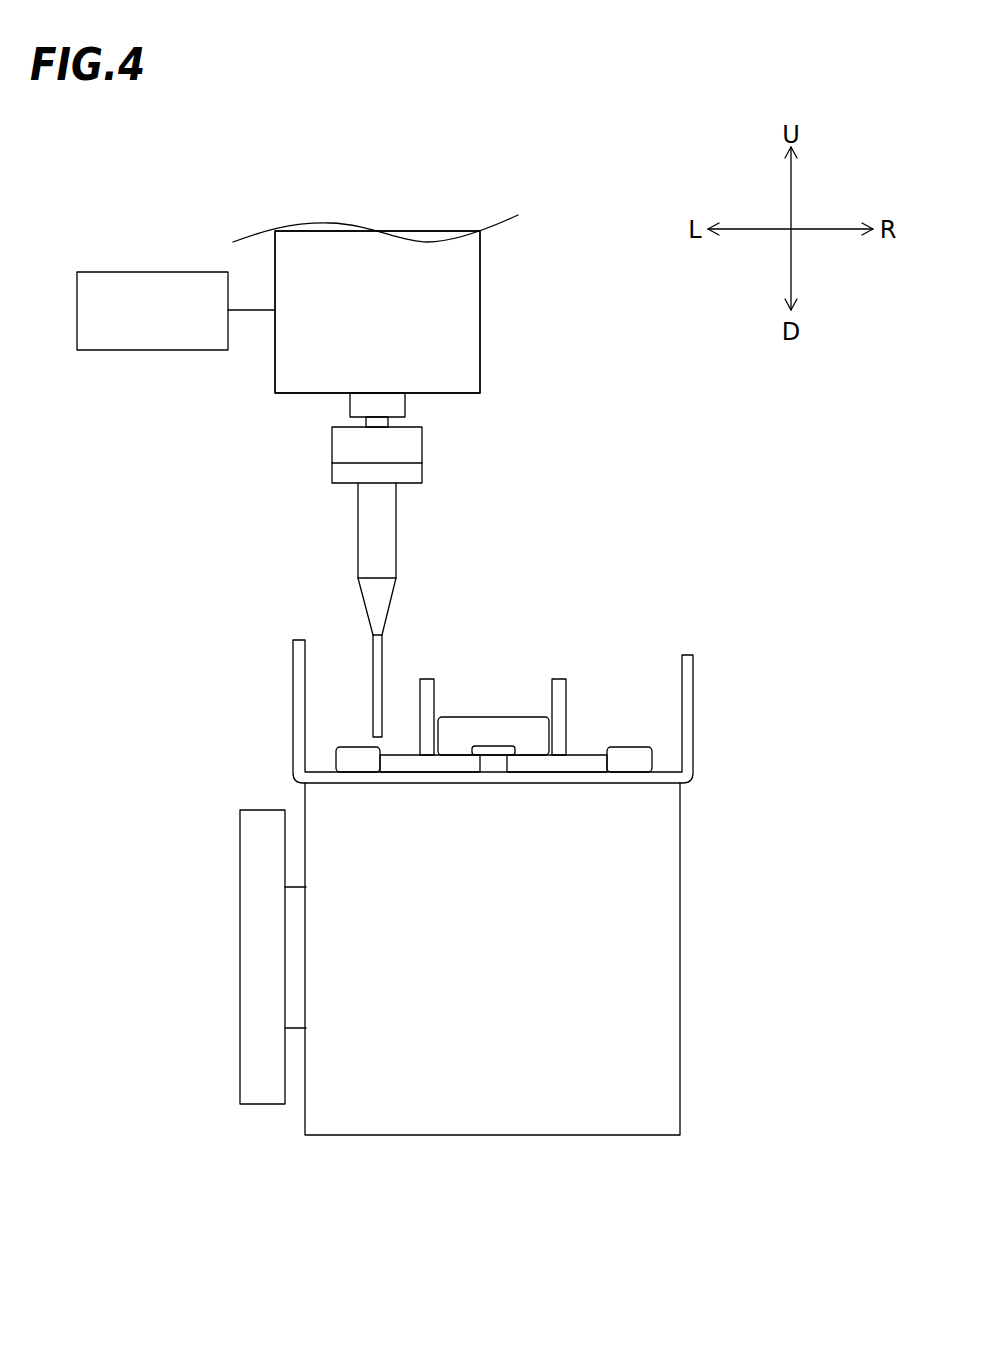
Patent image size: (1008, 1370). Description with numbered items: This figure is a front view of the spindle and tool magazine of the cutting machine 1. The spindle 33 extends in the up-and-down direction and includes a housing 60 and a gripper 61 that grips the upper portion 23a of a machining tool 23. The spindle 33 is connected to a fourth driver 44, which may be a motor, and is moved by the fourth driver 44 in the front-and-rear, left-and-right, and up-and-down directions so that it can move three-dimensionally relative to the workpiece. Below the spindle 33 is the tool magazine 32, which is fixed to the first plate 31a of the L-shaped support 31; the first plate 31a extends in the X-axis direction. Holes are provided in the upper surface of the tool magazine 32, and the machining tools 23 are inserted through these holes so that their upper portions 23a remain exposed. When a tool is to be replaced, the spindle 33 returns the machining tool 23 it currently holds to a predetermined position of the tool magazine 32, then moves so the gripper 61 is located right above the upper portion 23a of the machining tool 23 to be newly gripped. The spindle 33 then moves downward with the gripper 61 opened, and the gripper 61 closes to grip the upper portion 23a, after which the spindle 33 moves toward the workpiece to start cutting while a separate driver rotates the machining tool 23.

The cutting machine 1 is at (667, 448).
The machining tool 23 is at (358, 535).
The upper portion 23a is at (350, 418).
The support 31 is at (245, 945).
The first plate 31a is at (263, 1082).
The tool magazine 32 is at (703, 780).
The spindle 33 is at (418, 304).
The fourth driver 44 is at (148, 272).
The housing 60 is at (480, 352).
The gripper 61 is at (405, 402).